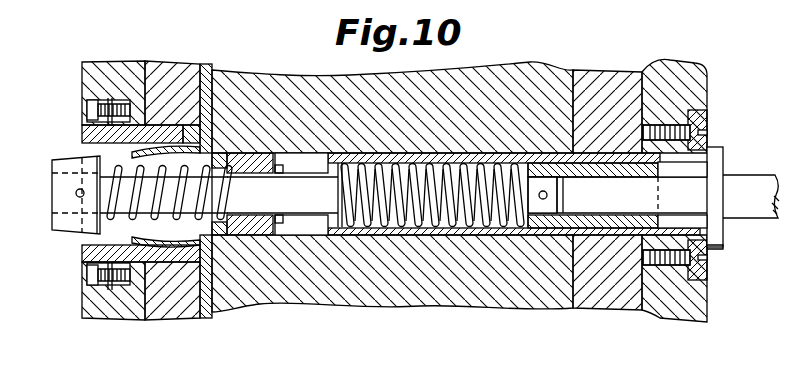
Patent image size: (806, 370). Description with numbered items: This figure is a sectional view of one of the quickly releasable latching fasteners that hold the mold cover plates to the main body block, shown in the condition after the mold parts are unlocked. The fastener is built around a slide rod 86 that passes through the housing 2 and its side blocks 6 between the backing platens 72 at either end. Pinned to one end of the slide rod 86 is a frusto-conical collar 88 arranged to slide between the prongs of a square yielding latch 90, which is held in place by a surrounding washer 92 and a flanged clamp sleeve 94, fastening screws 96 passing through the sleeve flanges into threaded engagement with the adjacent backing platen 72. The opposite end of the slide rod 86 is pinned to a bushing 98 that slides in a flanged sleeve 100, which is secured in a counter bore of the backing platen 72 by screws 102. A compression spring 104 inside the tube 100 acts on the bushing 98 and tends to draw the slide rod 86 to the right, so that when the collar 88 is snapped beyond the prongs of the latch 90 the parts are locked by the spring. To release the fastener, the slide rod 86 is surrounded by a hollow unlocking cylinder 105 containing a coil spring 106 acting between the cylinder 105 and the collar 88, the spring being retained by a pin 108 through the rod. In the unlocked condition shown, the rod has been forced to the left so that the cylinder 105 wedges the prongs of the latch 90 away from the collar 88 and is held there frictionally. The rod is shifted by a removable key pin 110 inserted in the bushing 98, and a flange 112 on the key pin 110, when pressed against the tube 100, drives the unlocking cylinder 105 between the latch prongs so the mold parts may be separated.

The housing 2 is at (493, 80).
The housing side block 6 is at (170, 73).
The backing platen 72 is at (693, 88).
The slide rod 86 is at (250, 203).
The frusto-conical collar 88 is at (57, 193).
The square yielding latch 90 is at (92, 249).
The washer 92 is at (192, 132).
The flanged clamp sleeve 94 is at (87, 133).
The fastening screws 96 is at (88, 110).
The bushing 98 is at (660, 167).
The flanged sleeve 100 is at (695, 232).
The screws 102 is at (703, 123).
The compression spring 104 is at (468, 220).
The unlocking cylinder 105 is at (213, 235).
The coil spring 106 is at (205, 160).
The pin 108 is at (278, 222).
The key pin 110 is at (757, 183).
The flange 112 is at (710, 247).